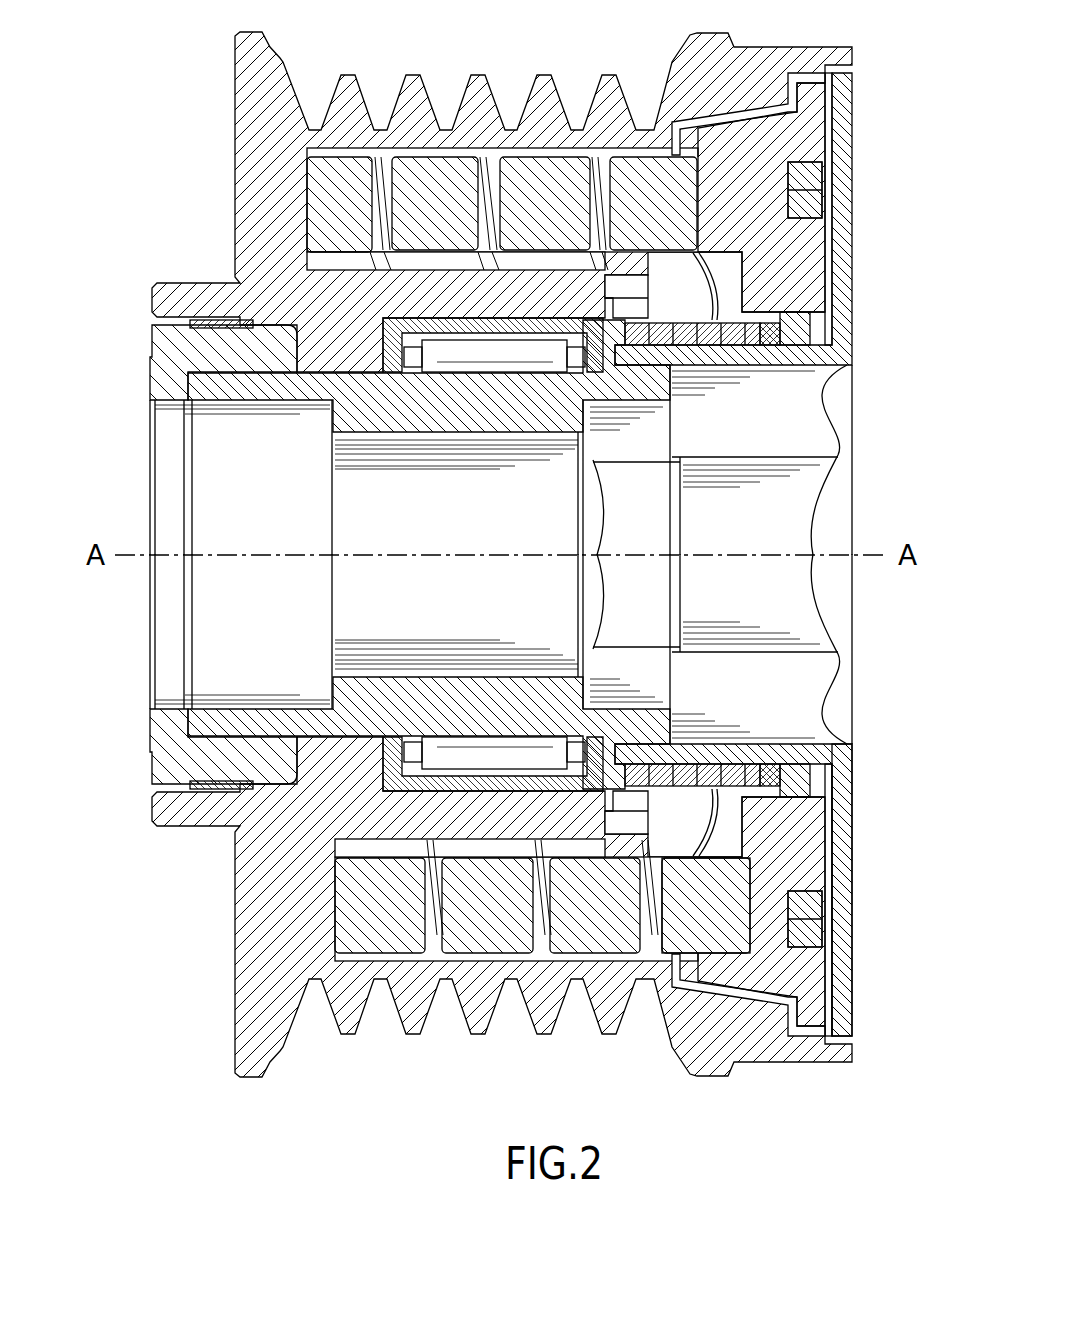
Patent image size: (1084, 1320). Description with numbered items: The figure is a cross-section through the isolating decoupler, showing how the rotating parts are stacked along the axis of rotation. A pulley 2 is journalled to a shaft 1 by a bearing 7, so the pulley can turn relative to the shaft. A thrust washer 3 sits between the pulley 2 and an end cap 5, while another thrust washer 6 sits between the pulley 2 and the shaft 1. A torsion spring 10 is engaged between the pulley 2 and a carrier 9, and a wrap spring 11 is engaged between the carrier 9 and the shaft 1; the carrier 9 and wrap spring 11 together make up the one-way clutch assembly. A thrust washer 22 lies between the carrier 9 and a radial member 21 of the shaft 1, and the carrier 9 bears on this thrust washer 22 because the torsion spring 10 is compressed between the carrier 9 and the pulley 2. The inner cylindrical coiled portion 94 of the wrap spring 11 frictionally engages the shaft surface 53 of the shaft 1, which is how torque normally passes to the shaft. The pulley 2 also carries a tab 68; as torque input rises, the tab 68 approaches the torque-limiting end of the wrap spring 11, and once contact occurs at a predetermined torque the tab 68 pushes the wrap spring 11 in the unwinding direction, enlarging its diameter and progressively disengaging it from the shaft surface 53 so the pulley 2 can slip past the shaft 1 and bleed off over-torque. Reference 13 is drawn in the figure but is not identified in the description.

The shaft 1 is at (267, 710).
The pulley 2 is at (243, 192).
The thrust washer 3 is at (290, 335).
The end cap 5 is at (180, 353).
The thrust washer 6 is at (615, 353).
The bearing 7 is at (487, 358).
The carrier 9 is at (785, 131).
The torsion spring 10 is at (335, 180).
The wrap spring 11 is at (803, 203).
The stop block 13 is at (797, 312).
The radial member 21 is at (848, 882).
The thrust washer 22 is at (833, 262).
The shaft surface 53 is at (775, 792).
The tab 68 is at (632, 282).
The inner cylindrical coiled portion 94 is at (732, 335).